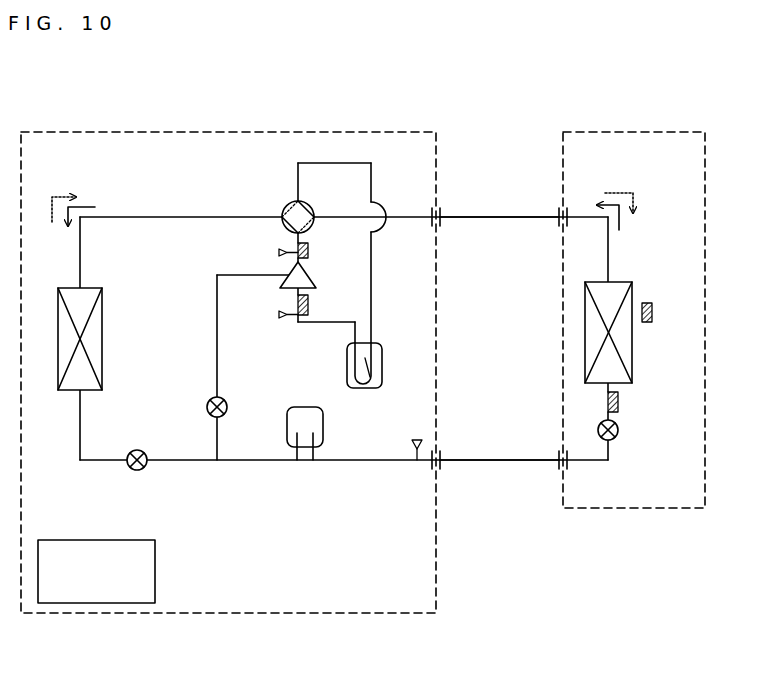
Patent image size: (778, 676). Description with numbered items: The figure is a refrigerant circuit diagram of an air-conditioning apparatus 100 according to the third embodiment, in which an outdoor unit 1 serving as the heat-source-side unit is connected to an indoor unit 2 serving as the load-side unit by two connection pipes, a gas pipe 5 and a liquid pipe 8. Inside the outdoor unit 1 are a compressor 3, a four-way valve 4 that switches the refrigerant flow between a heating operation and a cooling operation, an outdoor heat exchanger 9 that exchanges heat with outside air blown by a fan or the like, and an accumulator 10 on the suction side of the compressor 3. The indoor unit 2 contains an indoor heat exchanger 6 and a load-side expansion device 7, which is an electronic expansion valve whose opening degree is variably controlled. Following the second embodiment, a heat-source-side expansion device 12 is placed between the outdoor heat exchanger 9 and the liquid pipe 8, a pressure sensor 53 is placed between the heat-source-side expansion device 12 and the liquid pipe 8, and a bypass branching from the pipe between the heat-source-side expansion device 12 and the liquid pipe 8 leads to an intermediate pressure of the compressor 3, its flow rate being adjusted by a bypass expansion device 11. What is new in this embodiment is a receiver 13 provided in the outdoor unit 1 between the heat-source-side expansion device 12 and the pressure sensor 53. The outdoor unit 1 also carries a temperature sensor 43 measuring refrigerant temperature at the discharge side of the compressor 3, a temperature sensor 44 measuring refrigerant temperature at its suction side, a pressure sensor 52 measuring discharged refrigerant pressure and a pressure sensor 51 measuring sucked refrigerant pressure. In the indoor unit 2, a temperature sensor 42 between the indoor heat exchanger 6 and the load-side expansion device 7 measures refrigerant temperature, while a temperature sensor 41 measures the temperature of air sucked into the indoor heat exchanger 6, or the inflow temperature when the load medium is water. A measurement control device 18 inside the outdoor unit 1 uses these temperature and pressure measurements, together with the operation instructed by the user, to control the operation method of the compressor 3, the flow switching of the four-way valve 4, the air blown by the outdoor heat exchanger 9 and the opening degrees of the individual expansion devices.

The air-conditioning apparatus 100 is at (486, 129).
The outdoor unit 1 is at (247, 372).
The indoor unit 2 is at (650, 320).
The compressor 3 is at (312, 275).
The four-way valve 4 is at (306, 202).
The gas pipe 5 is at (499, 199).
The indoor heat exchanger 6 is at (632, 348).
The load-side expansion device 7 is at (626, 437).
The liquid pipe 8 is at (499, 479).
The outdoor heat exchanger 9 is at (77, 361).
The accumulator 10 is at (378, 348).
The bypass expansion device 11 is at (231, 389).
The heat-source-side expansion device 12 is at (156, 441).
The receiver 13 is at (316, 415).
The measurement control device 18 is at (104, 552).
The temperature sensor 41 is at (669, 313).
The temperature sensor 42 is at (635, 402).
The temperature sensor 43 is at (323, 250).
The temperature sensor 44 is at (324, 303).
The pressure sensor 51 is at (275, 297).
The pressure sensor 52 is at (275, 236).
The pressure sensor 53 is at (406, 430).